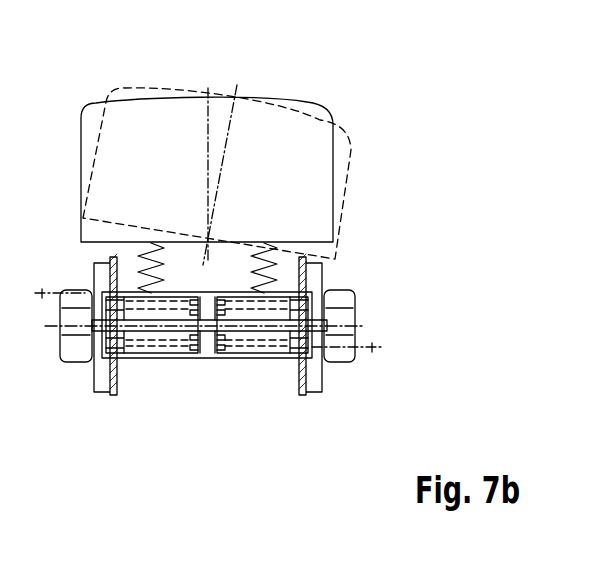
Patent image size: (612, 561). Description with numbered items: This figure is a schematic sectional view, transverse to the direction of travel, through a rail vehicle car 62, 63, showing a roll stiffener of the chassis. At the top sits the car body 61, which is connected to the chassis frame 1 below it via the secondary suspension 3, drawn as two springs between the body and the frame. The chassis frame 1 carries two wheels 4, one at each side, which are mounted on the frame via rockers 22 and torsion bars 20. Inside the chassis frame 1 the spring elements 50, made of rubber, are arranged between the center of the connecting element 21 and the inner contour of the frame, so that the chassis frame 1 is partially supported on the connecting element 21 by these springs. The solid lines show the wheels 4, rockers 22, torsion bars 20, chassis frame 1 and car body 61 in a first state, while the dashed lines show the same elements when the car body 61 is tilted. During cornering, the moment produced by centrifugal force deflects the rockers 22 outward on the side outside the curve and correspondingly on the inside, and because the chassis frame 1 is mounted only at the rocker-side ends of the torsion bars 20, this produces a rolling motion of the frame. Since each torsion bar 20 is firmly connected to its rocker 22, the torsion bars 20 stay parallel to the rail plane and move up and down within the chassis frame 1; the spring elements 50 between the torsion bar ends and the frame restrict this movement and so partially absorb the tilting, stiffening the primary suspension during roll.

The chassis frame 1 is at (183, 360).
The secondary suspension 3 is at (282, 252).
The wheel 4 is at (93, 388).
The torsion bar 20 is at (128, 363).
The connecting element 21 is at (215, 355).
The rocker 22 is at (60, 360).
The spring element 50 is at (183, 301).
The car body 61 is at (80, 175).
The rail vehicle car 62 is at (374, 117).
The rail vehicle car 63 is at (220, 175).